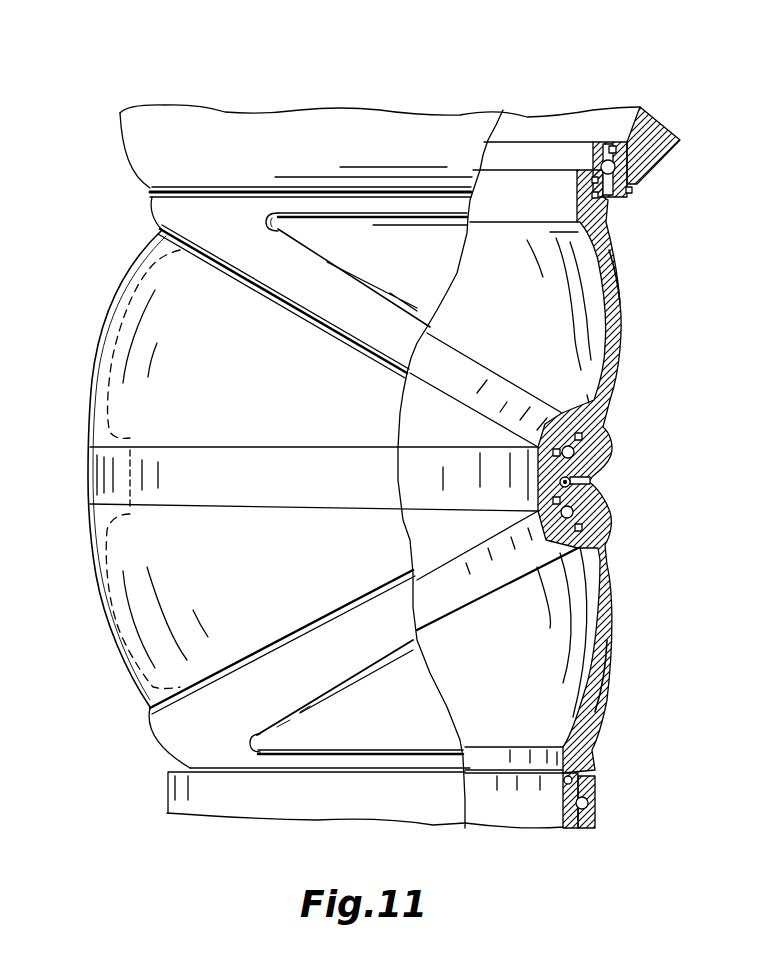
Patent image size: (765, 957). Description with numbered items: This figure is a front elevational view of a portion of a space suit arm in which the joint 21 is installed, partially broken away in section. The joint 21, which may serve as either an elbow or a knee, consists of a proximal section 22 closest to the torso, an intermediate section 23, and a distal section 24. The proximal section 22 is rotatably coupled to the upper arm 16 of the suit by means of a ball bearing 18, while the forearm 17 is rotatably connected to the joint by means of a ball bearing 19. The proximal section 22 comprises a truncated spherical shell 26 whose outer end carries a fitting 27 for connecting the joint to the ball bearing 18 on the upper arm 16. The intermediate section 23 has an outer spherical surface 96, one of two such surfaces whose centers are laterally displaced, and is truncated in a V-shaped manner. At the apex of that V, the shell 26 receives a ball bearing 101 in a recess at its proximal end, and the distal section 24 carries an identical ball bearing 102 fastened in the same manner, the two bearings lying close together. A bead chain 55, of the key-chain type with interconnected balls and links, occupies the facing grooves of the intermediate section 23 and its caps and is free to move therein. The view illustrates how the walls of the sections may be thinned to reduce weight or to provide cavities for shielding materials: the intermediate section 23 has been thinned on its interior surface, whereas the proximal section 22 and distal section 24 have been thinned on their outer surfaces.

The upper arm 16 is at (400, 133).
The forearm 17 is at (287, 810).
The ball bearing 18 is at (633, 183).
The ball bearing 19 is at (598, 801).
The joint 21 is at (622, 261).
The proximal section 22 is at (622, 312).
The intermediate section 23 is at (88, 618).
The distal section 24 is at (607, 700).
The truncated spherical shell 26 is at (620, 378).
The fitting 27 is at (575, 192).
The bead chain 55 is at (604, 480).
The outer spherical surface 96 is at (257, 381).
The ball bearing 101 is at (616, 457).
The ball bearing 102 is at (612, 501).